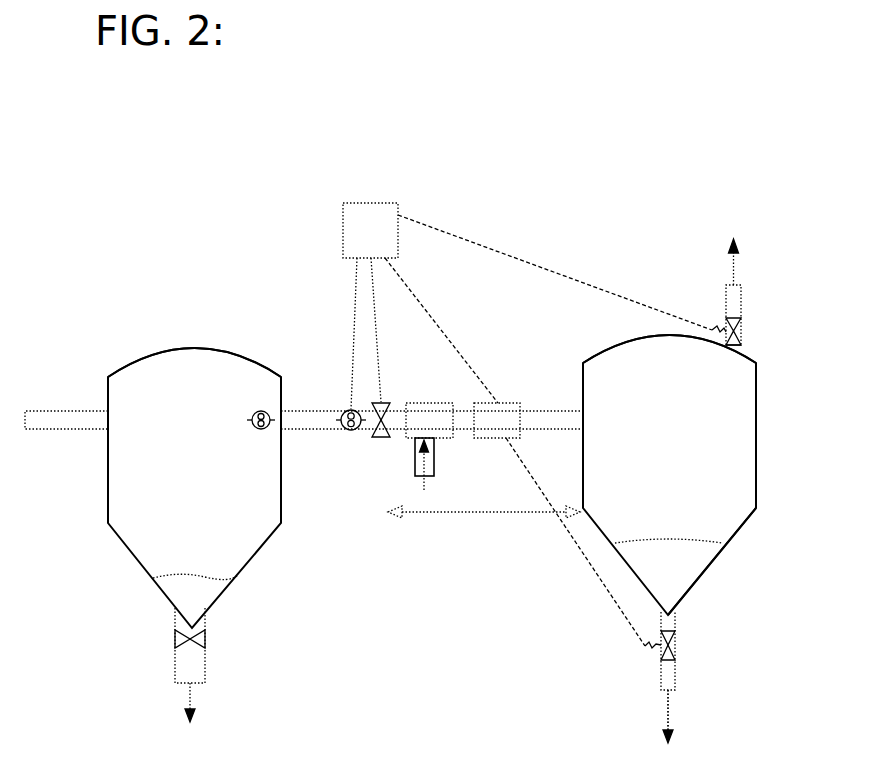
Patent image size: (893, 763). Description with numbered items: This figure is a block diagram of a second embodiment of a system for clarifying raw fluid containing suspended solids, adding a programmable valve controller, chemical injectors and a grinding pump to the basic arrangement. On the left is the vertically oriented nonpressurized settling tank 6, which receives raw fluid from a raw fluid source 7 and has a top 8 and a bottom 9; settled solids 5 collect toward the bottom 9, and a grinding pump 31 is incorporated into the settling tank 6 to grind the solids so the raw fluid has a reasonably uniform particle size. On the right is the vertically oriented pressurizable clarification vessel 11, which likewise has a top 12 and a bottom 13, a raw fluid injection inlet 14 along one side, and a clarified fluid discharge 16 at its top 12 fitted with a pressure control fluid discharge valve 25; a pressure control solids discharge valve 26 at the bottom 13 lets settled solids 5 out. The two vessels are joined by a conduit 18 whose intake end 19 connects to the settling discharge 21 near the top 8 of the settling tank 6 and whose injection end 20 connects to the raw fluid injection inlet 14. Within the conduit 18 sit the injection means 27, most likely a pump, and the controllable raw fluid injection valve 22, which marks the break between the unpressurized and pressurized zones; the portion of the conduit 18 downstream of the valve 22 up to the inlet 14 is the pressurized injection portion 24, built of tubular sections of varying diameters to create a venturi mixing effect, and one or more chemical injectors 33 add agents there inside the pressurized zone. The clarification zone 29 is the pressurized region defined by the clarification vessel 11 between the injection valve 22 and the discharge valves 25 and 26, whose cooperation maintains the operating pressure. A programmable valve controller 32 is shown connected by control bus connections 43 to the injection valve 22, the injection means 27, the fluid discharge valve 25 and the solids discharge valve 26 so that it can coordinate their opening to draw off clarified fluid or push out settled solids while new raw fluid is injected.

The settled solids 5 is at (668, 559).
The settling tank 6 is at (126, 340).
The raw fluid source 7 is at (49, 404).
The top of settling tank 8 is at (194, 353).
The bottom of settling tank 9 is at (179, 661).
The clarification vessel 11 is at (731, 568).
The top of clarification vessel 12 is at (669, 341).
The bottom of clarification vessel 13 is at (645, 664).
The raw fluid injection inlet 14 is at (569, 394).
The clarified fluid discharge 16 is at (758, 348).
The conduit 18 is at (314, 456).
The intake end of conduit 19 is at (308, 376).
The injection end of conduit 20 is at (525, 383).
The settling discharge 21 is at (289, 389).
The raw fluid injection valve 22 is at (381, 429).
The injection portion 24 is at (484, 513).
The fluid discharge valve 25 is at (742, 292).
The solids discharge valve 26 is at (676, 677).
The injection means 27 is at (351, 434).
The clarification zone 29 is at (669, 475).
The grinding pump 31 is at (261, 433).
The programmable valve controller 32 is at (370, 230).
The chemical injectors 33 is at (429, 446).
The control bus connections 43 is at (534, 431).